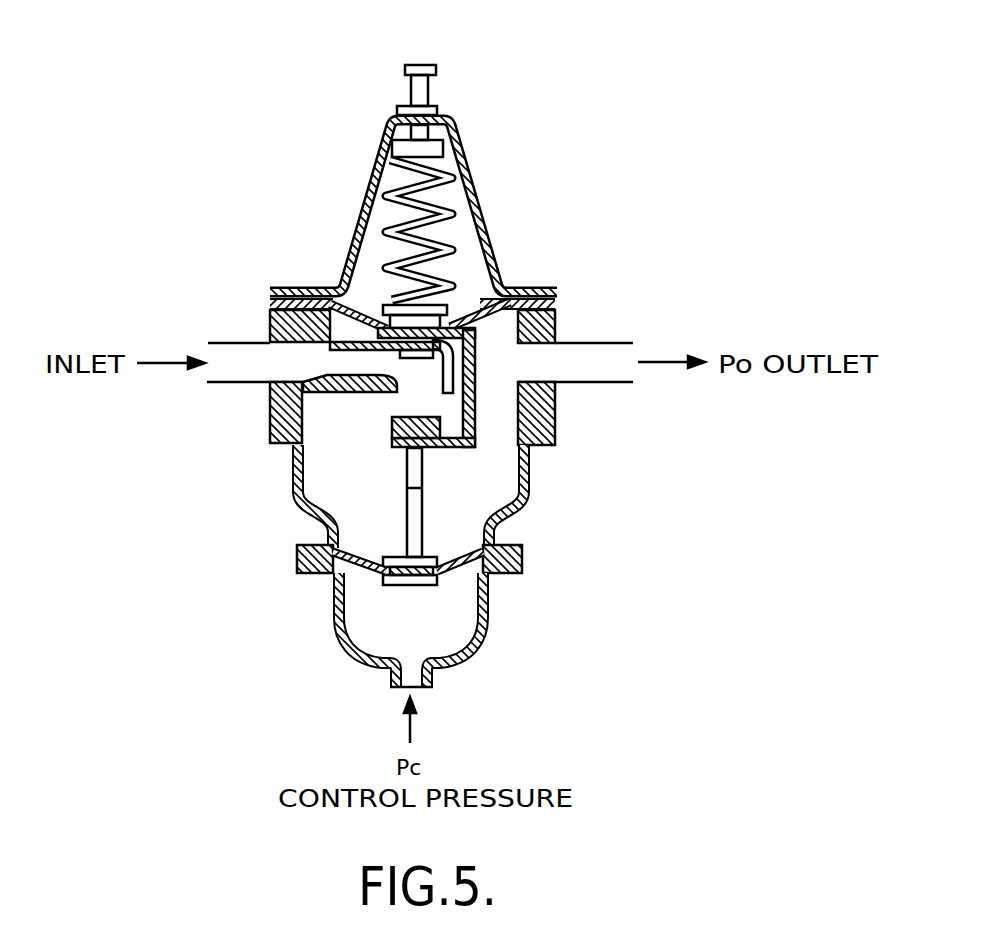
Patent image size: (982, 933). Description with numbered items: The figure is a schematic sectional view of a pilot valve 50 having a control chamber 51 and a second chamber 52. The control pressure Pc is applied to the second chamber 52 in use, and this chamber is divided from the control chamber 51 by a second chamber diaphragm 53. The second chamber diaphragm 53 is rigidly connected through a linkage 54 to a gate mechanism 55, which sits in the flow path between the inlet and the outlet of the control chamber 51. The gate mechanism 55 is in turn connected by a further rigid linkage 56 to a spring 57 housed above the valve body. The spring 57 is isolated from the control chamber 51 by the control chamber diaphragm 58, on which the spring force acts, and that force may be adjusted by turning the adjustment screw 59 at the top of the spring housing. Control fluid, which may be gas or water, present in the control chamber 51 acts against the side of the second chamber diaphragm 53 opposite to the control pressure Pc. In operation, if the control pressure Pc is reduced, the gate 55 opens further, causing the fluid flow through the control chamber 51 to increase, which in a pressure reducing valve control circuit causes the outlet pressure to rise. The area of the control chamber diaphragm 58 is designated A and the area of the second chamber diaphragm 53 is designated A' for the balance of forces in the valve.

The pilot valve 50 is at (318, 191).
The control chamber 51 is at (485, 483).
The second chamber 52 is at (377, 610).
The second chamber diaphragm 53 is at (467, 567).
The linkage 54 is at (407, 487).
The gate mechanism 55 is at (392, 423).
The further rigid linkage 56 is at (518, 410).
The spring 57 is at (450, 227).
The control chamber diaphragm 58 is at (493, 267).
The adjustment screw 59 is at (427, 62).